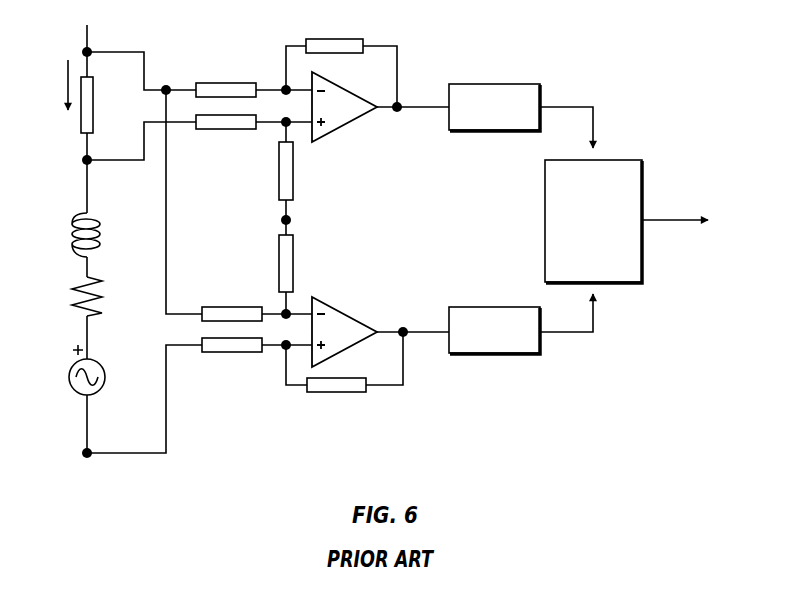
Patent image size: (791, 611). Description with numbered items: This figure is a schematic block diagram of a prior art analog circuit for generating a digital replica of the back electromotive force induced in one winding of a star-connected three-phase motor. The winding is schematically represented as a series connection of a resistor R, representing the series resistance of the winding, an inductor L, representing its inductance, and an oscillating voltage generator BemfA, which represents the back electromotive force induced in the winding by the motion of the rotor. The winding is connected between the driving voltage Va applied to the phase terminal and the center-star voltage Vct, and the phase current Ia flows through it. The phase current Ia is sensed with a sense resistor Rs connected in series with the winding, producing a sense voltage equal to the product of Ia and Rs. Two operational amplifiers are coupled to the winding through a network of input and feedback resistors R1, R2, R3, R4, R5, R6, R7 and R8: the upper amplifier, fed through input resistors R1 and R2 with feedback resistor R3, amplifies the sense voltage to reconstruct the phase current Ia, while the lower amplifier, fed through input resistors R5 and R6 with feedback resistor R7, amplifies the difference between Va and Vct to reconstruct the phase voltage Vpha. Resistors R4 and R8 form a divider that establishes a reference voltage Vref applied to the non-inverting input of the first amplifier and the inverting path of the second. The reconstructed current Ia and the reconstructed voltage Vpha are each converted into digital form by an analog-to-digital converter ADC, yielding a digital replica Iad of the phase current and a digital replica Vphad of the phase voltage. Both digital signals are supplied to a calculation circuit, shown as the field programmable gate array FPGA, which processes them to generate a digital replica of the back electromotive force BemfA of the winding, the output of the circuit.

The driving voltage Va is at (92, 14).
The phase current Ia is at (235, 84).
The sense resistor Rs is at (80, 116).
The inductor L is at (99, 235).
The resistor R is at (99, 296).
The oscillating voltage generator BemfA is at (396, 293).
The center-star voltage Vct is at (90, 476).
The input resistor R1 is at (226, 75).
The input resistor R2 is at (226, 138).
The feedback resistor R3 is at (334, 33).
The resistor R4 is at (298, 171).
The reference voltage Vref is at (313, 219).
The resistor R8 is at (273, 263).
The input resistor R5 is at (232, 300).
The input resistor R6 is at (232, 360).
The feedback resistor R7 is at (336, 399).
The phase voltage Vpha is at (417, 303).
The analog-to-digital converter ADC is at (494, 219).
The digital replica of the phase current Iad is at (562, 95).
The digital replica of the phase voltage Vphad is at (565, 312).
The field programmable gate array FPGA is at (593, 221).